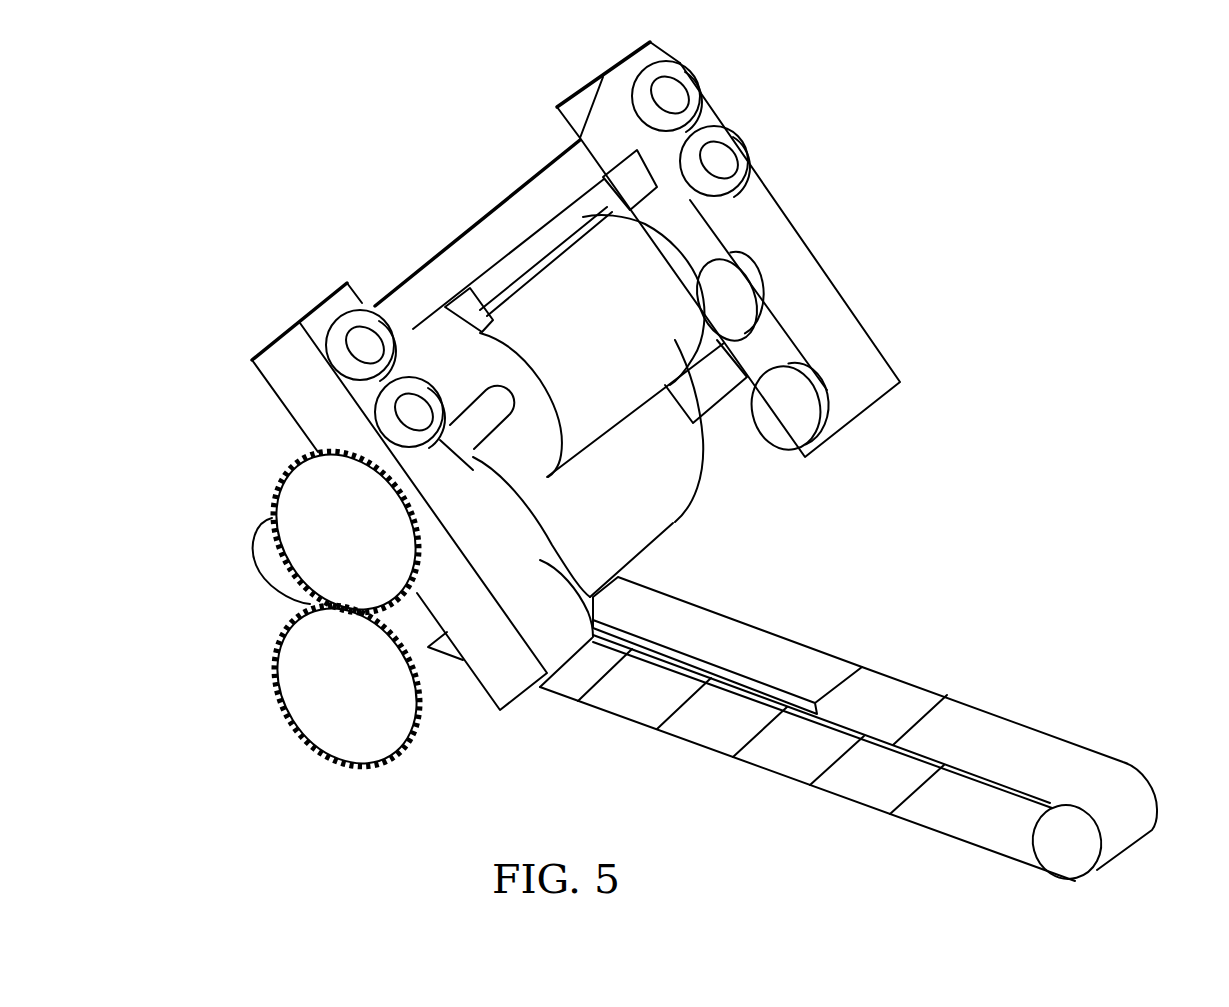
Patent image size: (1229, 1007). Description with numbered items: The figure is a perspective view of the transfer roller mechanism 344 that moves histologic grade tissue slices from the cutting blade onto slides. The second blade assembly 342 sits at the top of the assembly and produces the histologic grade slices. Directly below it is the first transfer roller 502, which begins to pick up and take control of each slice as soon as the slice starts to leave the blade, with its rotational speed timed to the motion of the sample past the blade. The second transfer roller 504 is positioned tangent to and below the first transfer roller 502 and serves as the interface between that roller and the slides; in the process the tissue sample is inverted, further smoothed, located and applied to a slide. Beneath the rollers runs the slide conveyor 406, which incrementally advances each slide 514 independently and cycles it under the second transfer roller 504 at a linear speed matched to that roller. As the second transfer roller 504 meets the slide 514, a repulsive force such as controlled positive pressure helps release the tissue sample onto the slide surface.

The second blade assembly 342 is at (605, 187).
The transfer roller mechanism 344 is at (252, 359).
The slide conveyor 406 is at (993, 735).
The first transfer roller 502 is at (623, 352).
The second transfer roller 504 is at (640, 524).
The slide 514 is at (752, 633).